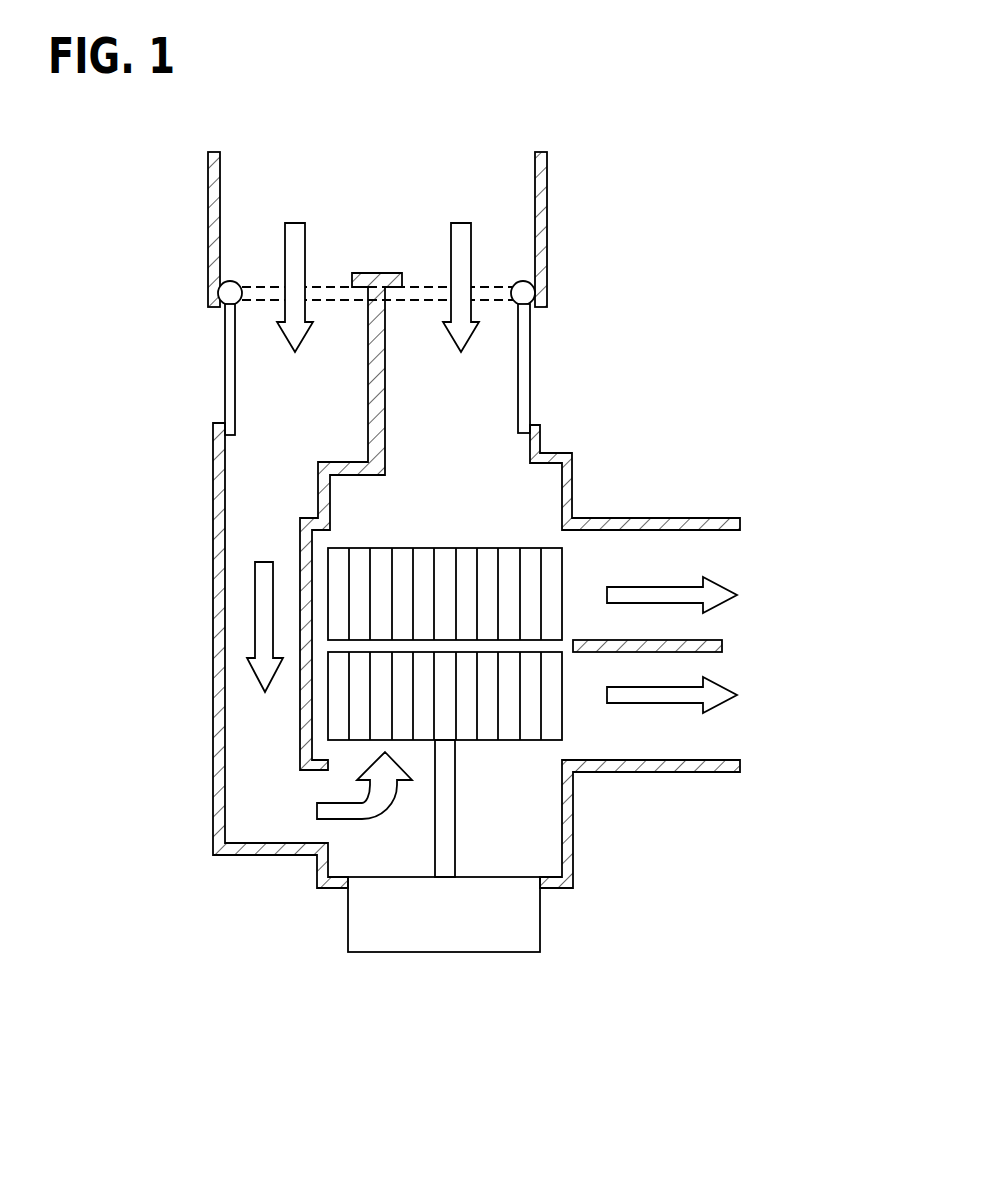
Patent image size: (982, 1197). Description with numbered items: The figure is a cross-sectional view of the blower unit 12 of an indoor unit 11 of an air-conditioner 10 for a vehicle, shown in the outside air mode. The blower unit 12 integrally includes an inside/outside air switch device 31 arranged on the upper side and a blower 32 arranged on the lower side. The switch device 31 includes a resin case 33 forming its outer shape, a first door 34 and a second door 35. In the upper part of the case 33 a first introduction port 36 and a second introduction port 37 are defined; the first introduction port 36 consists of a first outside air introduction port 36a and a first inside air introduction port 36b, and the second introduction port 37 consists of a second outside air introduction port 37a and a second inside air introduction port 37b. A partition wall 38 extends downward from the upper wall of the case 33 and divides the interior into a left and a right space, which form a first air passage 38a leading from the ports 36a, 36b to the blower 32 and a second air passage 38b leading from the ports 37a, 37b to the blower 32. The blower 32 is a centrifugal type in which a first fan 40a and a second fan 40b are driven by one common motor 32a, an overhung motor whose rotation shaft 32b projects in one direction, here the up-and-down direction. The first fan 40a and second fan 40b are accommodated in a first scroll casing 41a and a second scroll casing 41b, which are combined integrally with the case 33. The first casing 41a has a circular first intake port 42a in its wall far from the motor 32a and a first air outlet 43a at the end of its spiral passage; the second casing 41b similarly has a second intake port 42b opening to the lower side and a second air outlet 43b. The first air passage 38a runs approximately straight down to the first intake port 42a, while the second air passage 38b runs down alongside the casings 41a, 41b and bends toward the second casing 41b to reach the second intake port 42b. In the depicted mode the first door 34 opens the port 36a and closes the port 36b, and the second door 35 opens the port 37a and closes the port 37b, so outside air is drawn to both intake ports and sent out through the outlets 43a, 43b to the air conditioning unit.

The air-conditioner 10 is at (705, 210).
The indoor unit 11 is at (610, 317).
The blower unit 12 is at (700, 452).
The inside/outside air switch device 31 is at (145, 277).
The blower 32 is at (533, 762).
The motor for blower 32a is at (527, 952).
The rotation shaft 32b is at (443, 830).
The case 33 is at (213, 618).
The first door 34 is at (530, 370).
The second door 35 is at (223, 372).
The first introduction port 36 is at (553, 168).
The first outside air introduction port 36a is at (497, 283).
The first inside air introduction port 36b is at (545, 333).
The second introduction port 37 is at (98, 168).
The second outside air introduction port 37a is at (258, 285).
The second inside air introduction port 37b is at (213, 333).
The partition wall 38 is at (387, 404).
The first air passage 38a is at (458, 408).
The second air passage 38b is at (224, 458).
The first fan 40a is at (363, 577).
The second fan 40b is at (360, 692).
The first scroll casing 41a is at (300, 535).
The second scroll casing 41b is at (300, 678).
The first intake port 42a is at (457, 482).
The second intake port 42b is at (320, 888).
The first air outlet 43a is at (678, 562).
The second air outlet 43b is at (650, 718).